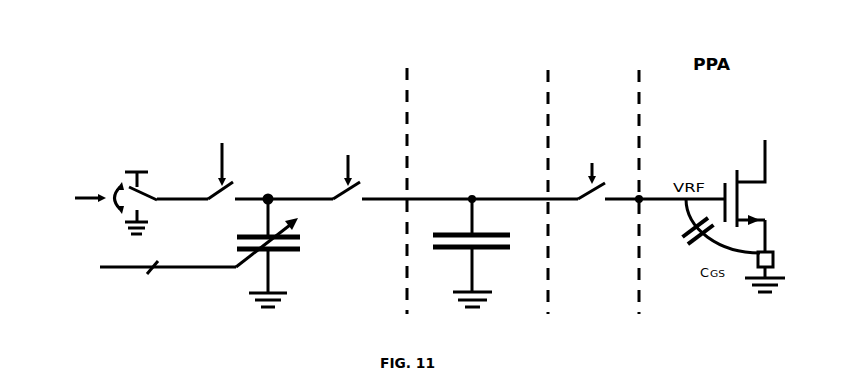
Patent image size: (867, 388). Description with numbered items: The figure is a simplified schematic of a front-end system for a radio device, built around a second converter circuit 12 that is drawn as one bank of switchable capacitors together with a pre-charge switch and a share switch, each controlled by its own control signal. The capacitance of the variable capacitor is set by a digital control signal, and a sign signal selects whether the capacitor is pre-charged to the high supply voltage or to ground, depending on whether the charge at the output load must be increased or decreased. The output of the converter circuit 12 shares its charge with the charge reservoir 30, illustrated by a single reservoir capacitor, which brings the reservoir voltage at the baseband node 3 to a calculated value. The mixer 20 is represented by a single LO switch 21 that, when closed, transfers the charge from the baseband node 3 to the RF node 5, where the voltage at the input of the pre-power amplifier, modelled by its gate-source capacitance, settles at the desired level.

The second converter circuit 12 is at (255, 176).
The charge reservoir 30 is at (500, 169).
The mixer 20 is at (641, 121).
The LO switch 21 is at (582, 193).
The baseband node 3 is at (472, 199).
The RF node 5 is at (639, 199).